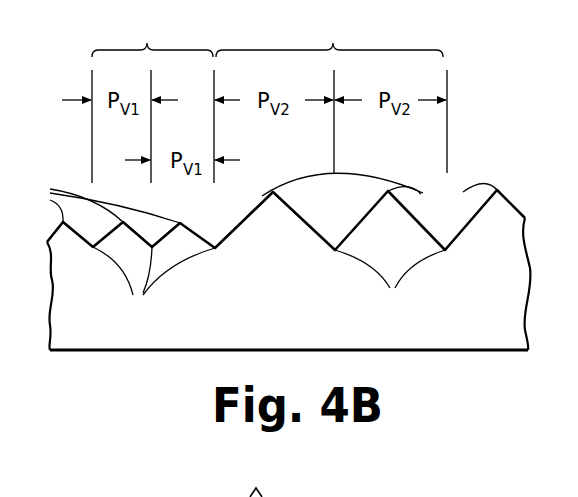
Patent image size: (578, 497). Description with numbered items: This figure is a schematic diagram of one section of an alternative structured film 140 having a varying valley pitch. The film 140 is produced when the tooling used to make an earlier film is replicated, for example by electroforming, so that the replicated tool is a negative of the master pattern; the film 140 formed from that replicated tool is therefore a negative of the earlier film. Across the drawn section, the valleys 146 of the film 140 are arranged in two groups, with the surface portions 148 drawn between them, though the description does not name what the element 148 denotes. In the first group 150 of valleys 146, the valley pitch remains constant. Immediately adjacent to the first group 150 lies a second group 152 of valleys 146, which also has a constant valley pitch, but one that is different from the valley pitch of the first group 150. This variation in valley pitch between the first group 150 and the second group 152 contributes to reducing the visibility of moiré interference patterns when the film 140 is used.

The film 140 is at (535, 233).
The valleys 146 is at (269, 286).
The curved peak surface 148 is at (253, 198).
The first group of valleys 150 is at (153, 102).
The second group of valleys 152 is at (331, 97).